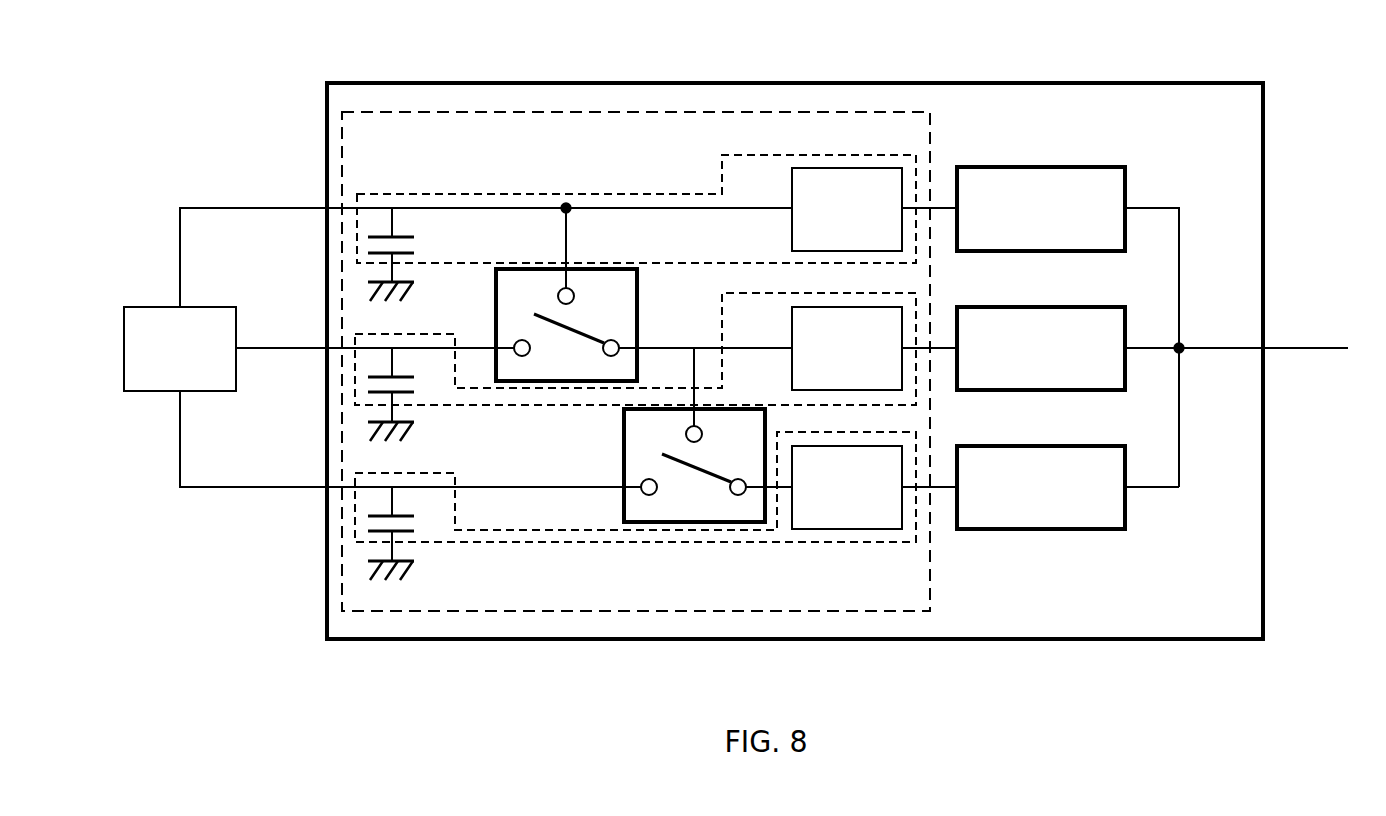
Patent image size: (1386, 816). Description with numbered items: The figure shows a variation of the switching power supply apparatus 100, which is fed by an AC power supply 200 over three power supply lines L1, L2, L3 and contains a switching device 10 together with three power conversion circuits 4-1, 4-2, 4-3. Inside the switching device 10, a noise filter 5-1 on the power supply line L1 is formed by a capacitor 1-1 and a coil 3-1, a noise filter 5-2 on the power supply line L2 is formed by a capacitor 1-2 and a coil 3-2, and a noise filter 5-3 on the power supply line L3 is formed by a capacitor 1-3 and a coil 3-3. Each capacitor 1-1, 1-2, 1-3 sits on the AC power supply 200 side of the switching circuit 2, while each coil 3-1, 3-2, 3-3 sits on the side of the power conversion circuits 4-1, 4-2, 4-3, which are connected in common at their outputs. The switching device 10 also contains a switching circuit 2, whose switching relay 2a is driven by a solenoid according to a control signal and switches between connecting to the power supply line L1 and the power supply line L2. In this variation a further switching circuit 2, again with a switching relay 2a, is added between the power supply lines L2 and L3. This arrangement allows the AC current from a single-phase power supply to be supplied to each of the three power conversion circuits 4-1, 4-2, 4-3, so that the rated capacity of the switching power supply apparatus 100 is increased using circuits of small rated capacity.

The switching power supply apparatus 100 is at (1193, 83).
The switching device 10 is at (845, 112).
The AC power supply 200 is at (164, 307).
The power supply line L1 is at (293, 208).
The power supply line L2 is at (293, 348).
The power supply line L3 is at (293, 487).
The capacitor 1-1 is at (408, 252).
The capacitor 1-2 is at (408, 392).
The capacitor 1-3 is at (408, 531).
The switching circuit 2 is at (637, 284).
The switching relay 2a is at (584, 341).
The coil 3-1 is at (792, 226).
The coil 3-2 is at (792, 366).
The coil 3-3 is at (845, 530).
The power conversion circuit 4-1 is at (1053, 251).
The power conversion circuit 4-2 is at (1053, 390).
The power conversion circuit 4-3 is at (1053, 529).
The noise filter 5-1 is at (722, 157).
The noise filter 5-2 is at (722, 317).
The noise filter 5-3 is at (575, 543).